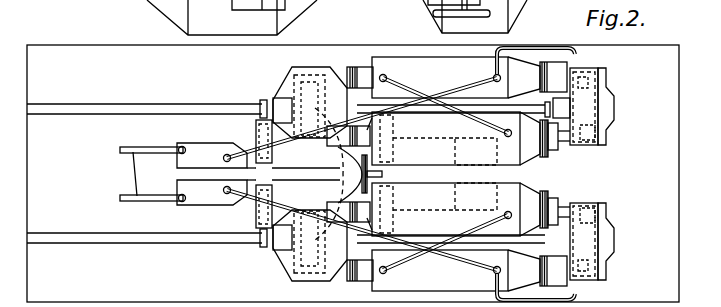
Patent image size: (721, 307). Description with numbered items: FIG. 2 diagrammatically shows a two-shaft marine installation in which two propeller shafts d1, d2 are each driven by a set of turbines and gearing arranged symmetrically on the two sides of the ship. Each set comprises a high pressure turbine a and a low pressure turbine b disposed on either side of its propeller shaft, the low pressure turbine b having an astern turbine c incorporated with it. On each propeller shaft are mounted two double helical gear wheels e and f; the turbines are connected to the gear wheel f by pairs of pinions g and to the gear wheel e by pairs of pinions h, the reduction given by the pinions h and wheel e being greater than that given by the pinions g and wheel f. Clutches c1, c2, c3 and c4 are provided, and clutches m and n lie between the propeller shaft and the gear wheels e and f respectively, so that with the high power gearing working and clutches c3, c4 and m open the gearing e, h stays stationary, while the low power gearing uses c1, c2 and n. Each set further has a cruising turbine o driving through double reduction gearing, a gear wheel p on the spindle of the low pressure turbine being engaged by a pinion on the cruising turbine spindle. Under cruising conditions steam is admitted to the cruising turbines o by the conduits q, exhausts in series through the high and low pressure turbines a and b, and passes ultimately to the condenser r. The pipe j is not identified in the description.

The propeller shaft d1 is at (86, 110).
The propeller shaft d2 is at (81, 241).
The conduit q is at (152, 174).
The cruising turbine o is at (200, 187).
The gear wheel p is at (293, 174).
The double helical gear wheel e is at (308, 100).
The pinion h is at (303, 81).
The clutch c3 is at (360, 287).
The clutch m is at (349, 126).
The clutch c4 is at (339, 174).
The astern turbine c is at (389, 193).
The high pressure turbine a is at (456, 174).
The low pressure turbine b is at (456, 174).
The clutch c1 is at (554, 174).
The condenser r is at (542, 208).
The clutch c2 is at (563, 212).
The clutch n is at (557, 108).
The double helical gear wheel f is at (596, 110).
The pinion g is at (600, 76).
The pipe j is at (576, 55).